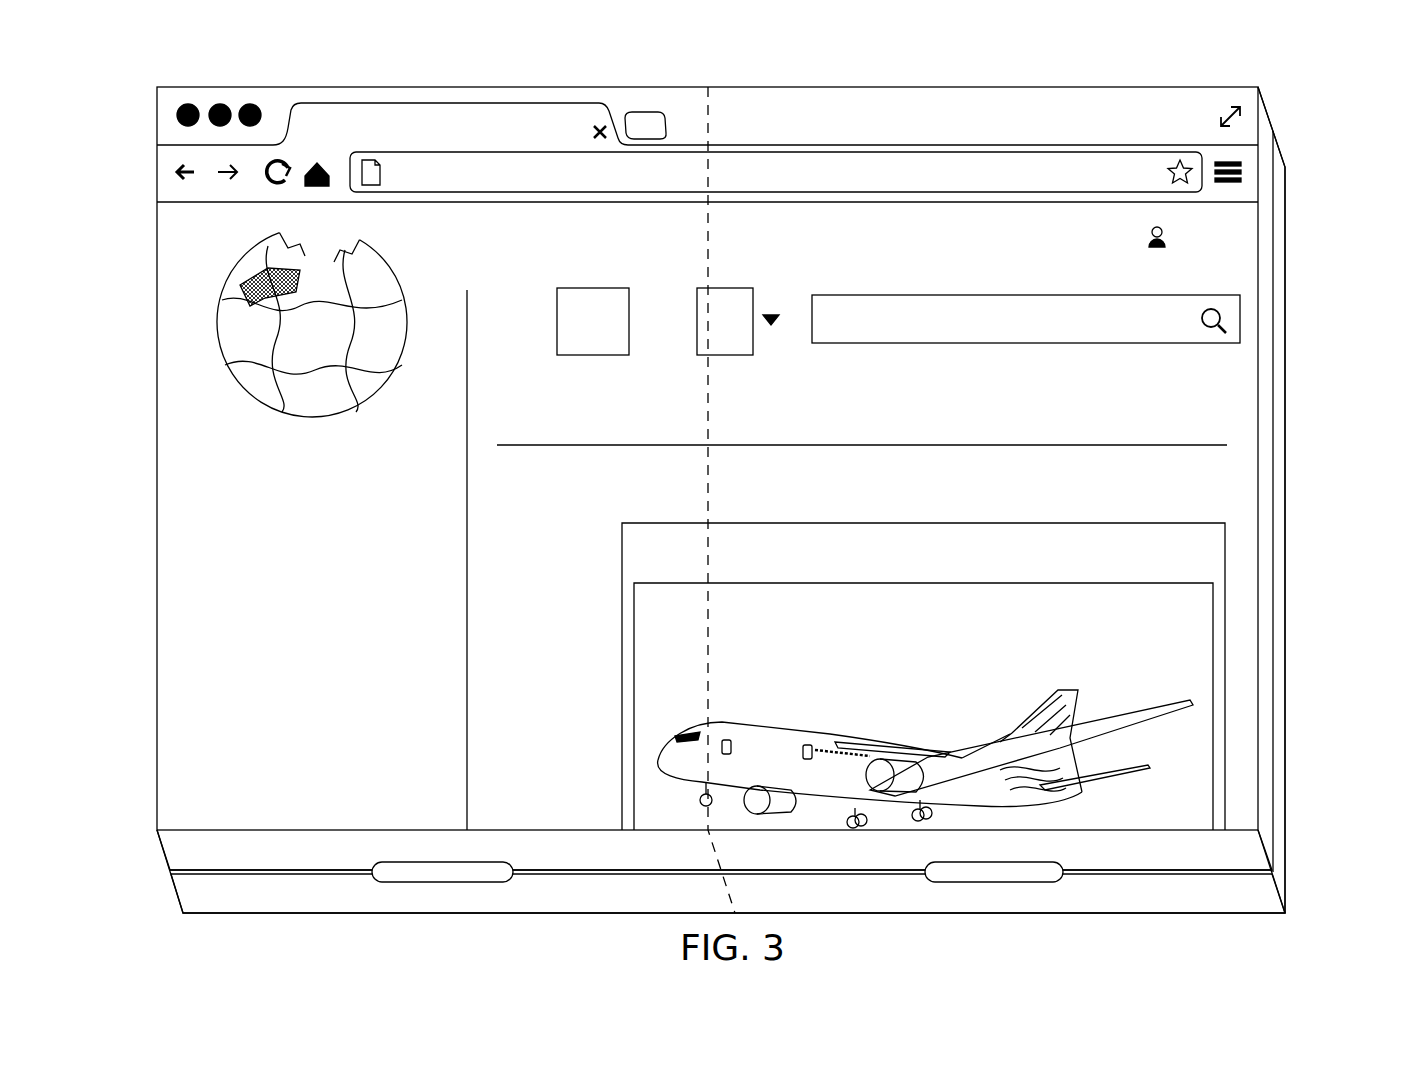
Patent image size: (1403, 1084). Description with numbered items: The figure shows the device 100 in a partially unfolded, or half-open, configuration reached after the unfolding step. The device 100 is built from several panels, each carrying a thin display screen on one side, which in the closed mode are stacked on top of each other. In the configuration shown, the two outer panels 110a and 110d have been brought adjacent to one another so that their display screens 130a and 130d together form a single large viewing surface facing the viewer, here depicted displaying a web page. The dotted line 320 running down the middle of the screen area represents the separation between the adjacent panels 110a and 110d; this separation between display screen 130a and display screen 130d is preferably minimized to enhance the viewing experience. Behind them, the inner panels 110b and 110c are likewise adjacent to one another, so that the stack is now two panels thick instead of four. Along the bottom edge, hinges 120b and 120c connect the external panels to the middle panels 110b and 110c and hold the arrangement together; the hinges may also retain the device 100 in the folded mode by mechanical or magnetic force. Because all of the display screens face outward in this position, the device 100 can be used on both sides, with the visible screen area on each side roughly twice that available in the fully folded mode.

The device 100 is at (168, 68).
The dotted line 320 is at (709, 124).
The display screen 130a is at (192, 248).
The display screen 130d is at (1222, 400).
The panel 110a is at (190, 848).
The panel 110b is at (193, 892).
The panel 110c is at (1280, 300).
The panel 110d is at (1265, 258).
The hinge 120b is at (480, 862).
The hinge 120c is at (1063, 880).